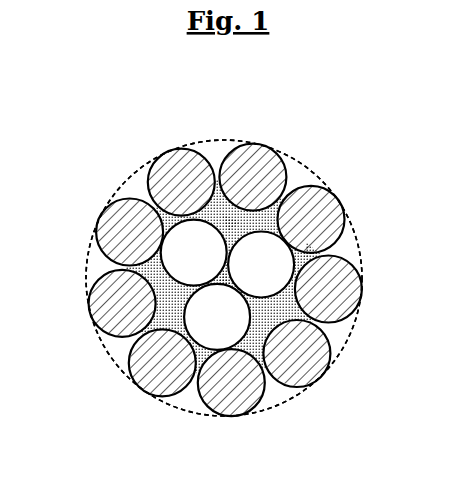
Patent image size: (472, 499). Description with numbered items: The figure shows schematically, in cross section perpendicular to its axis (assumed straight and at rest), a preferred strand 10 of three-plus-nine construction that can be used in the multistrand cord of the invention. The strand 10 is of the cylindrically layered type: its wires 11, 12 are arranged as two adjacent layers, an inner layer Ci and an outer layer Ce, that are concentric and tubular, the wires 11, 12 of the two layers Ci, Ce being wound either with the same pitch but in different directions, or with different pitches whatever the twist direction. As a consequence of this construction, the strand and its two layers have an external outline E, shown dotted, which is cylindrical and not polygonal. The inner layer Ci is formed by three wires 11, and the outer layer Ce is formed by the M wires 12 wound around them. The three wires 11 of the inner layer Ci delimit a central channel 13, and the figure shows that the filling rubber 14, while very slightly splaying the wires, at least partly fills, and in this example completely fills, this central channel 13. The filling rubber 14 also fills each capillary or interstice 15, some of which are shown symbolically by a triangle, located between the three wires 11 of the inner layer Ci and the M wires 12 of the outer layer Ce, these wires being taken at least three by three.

The strand 10 is at (230, 272).
The wires of the inner layer 11 is at (217, 317).
The wires of the outer layer 12 is at (112, 303).
The central channel 13 is at (232, 276).
The filling rubber 14 is at (216, 216).
The capillary or interstice 15 is at (240, 221).
The external outline E is at (360, 347).
The outer layer Ce is at (120, 174).
The inner layer Ci is at (158, 328).